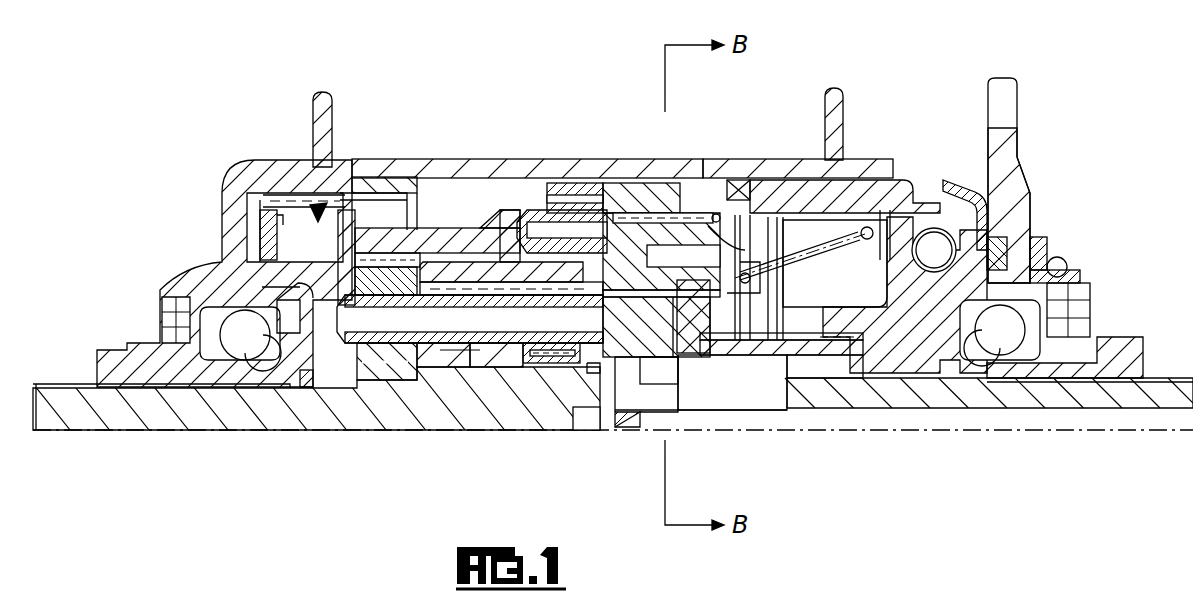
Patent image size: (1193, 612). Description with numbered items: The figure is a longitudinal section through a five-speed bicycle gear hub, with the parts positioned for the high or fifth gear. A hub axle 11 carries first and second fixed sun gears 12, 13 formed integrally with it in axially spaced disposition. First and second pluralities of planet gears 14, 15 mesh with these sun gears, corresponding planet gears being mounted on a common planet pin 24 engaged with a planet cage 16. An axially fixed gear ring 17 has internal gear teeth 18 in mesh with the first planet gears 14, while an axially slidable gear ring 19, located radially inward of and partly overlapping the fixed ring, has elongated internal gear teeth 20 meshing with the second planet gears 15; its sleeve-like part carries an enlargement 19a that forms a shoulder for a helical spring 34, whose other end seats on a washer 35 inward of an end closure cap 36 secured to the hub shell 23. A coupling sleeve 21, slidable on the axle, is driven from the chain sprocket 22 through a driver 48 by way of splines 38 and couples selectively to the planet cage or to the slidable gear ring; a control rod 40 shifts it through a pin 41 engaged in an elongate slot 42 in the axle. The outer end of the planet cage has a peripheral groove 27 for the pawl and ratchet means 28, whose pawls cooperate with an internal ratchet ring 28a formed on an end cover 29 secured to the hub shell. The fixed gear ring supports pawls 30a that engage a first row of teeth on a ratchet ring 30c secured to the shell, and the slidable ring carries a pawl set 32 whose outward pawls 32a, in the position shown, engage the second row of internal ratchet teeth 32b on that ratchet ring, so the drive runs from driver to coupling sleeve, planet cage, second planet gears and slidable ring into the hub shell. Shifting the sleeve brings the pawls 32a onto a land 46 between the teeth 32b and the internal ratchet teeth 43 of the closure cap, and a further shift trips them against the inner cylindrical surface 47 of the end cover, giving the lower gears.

The hub axle 11 is at (123, 432).
The first fixed sun gear 12 is at (427, 347).
The second fixed sun gear 13 is at (592, 408).
The first plurality of planet gears 14 is at (372, 358).
The second plurality of planet gears 15 is at (547, 347).
The planet cage 16 is at (480, 357).
The axially fixed gear ring 17 is at (502, 208).
The internal gear teeth 18 is at (430, 262).
The axially slidable gear ring 19 is at (508, 300).
The enlargement 19a is at (434, 262).
The elongated internal gear teeth 20 is at (457, 282).
The coupling sleeve 21 is at (840, 363).
The chain sprocket 22 is at (1007, 155).
The hub shell 23 is at (732, 165).
The planet pin 24 is at (447, 352).
The peripheral groove 27 is at (280, 218).
The pawl and ratchet means 28 is at (318, 216).
The internal ratchet ring 28a is at (283, 203).
The end cover 29 is at (226, 240).
The pawls 30a is at (578, 205).
The ratchet ring 30c is at (645, 192).
The drive member 32 is at (661, 285).
The pawls 32a is at (659, 372).
The second row of internal ratchet teeth 32b is at (677, 213).
The helical spring 34 is at (840, 243).
The washer 35 is at (913, 200).
The end closure cap 36 is at (893, 180).
The splines 38 is at (757, 347).
The control rod 40 is at (1037, 425).
The pin 41 is at (665, 418).
The elongate slot 42 is at (770, 400).
The internal ratchet teeth 43 is at (762, 212).
The land 46 is at (717, 217).
The inner cylindrical surface 47 is at (840, 200).
The driver 48 is at (940, 310).